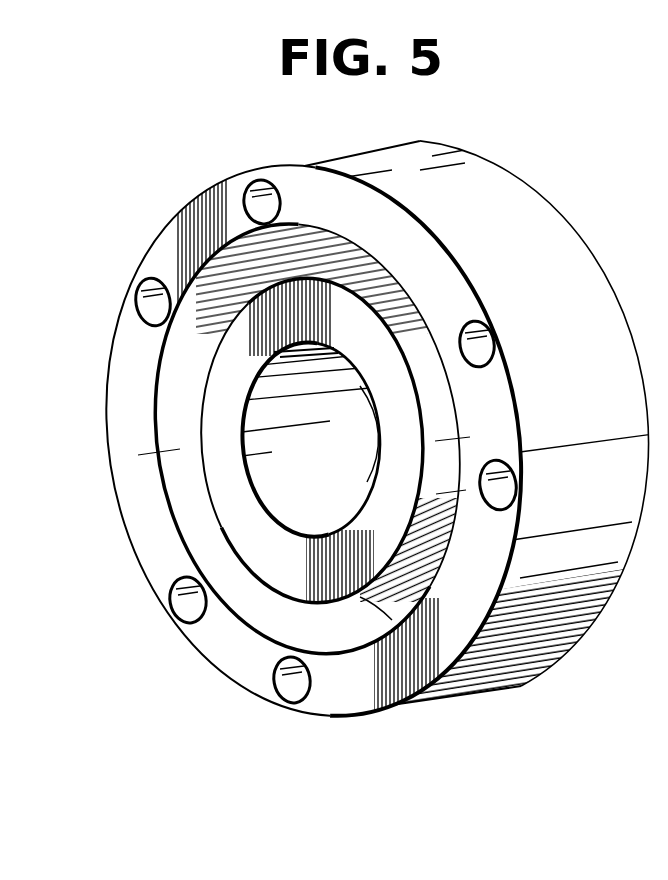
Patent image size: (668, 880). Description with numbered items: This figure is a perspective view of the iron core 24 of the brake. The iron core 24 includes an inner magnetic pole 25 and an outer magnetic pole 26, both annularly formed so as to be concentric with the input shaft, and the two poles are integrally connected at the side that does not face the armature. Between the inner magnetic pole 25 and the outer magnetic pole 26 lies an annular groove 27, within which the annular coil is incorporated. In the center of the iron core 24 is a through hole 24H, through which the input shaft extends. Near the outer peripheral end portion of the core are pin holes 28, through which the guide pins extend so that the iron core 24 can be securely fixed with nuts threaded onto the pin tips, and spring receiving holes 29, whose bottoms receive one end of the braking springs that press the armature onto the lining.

The iron core 24 is at (470, 702).
The through hole 24H is at (282, 480).
The inner magnetic pole 25 is at (225, 385).
The outer magnetic pole 26 is at (219, 648).
The annular groove 27 is at (348, 625).
The pin holes 28 is at (270, 200).
The spring receiving holes 29 is at (160, 300).